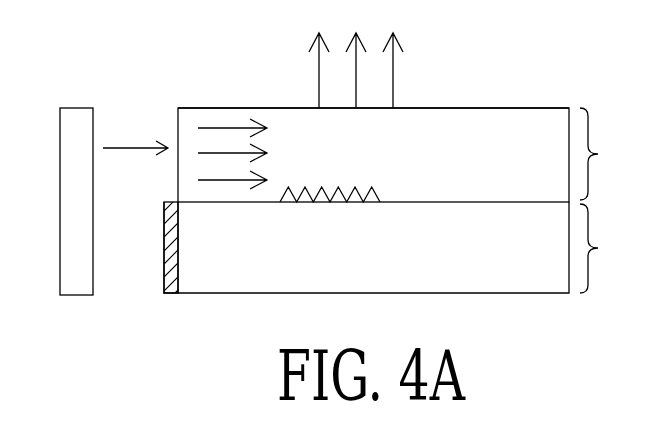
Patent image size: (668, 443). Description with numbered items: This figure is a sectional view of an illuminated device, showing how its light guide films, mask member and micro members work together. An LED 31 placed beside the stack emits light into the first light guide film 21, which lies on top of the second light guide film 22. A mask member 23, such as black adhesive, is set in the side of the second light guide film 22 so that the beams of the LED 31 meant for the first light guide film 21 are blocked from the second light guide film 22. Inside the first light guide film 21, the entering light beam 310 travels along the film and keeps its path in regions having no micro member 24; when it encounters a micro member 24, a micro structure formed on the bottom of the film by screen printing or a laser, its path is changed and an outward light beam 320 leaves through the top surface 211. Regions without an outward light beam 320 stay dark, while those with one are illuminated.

The LED 31 is at (77, 112).
The entering light beam 310 is at (226, 130).
The outward light beam 320 is at (393, 73).
The first light guide film 21 is at (405, 155).
The light emitting surface 211 is at (535, 117).
The second light guide film 22 is at (398, 247).
The mask member 23 is at (168, 245).
The micro member 24 is at (380, 197).